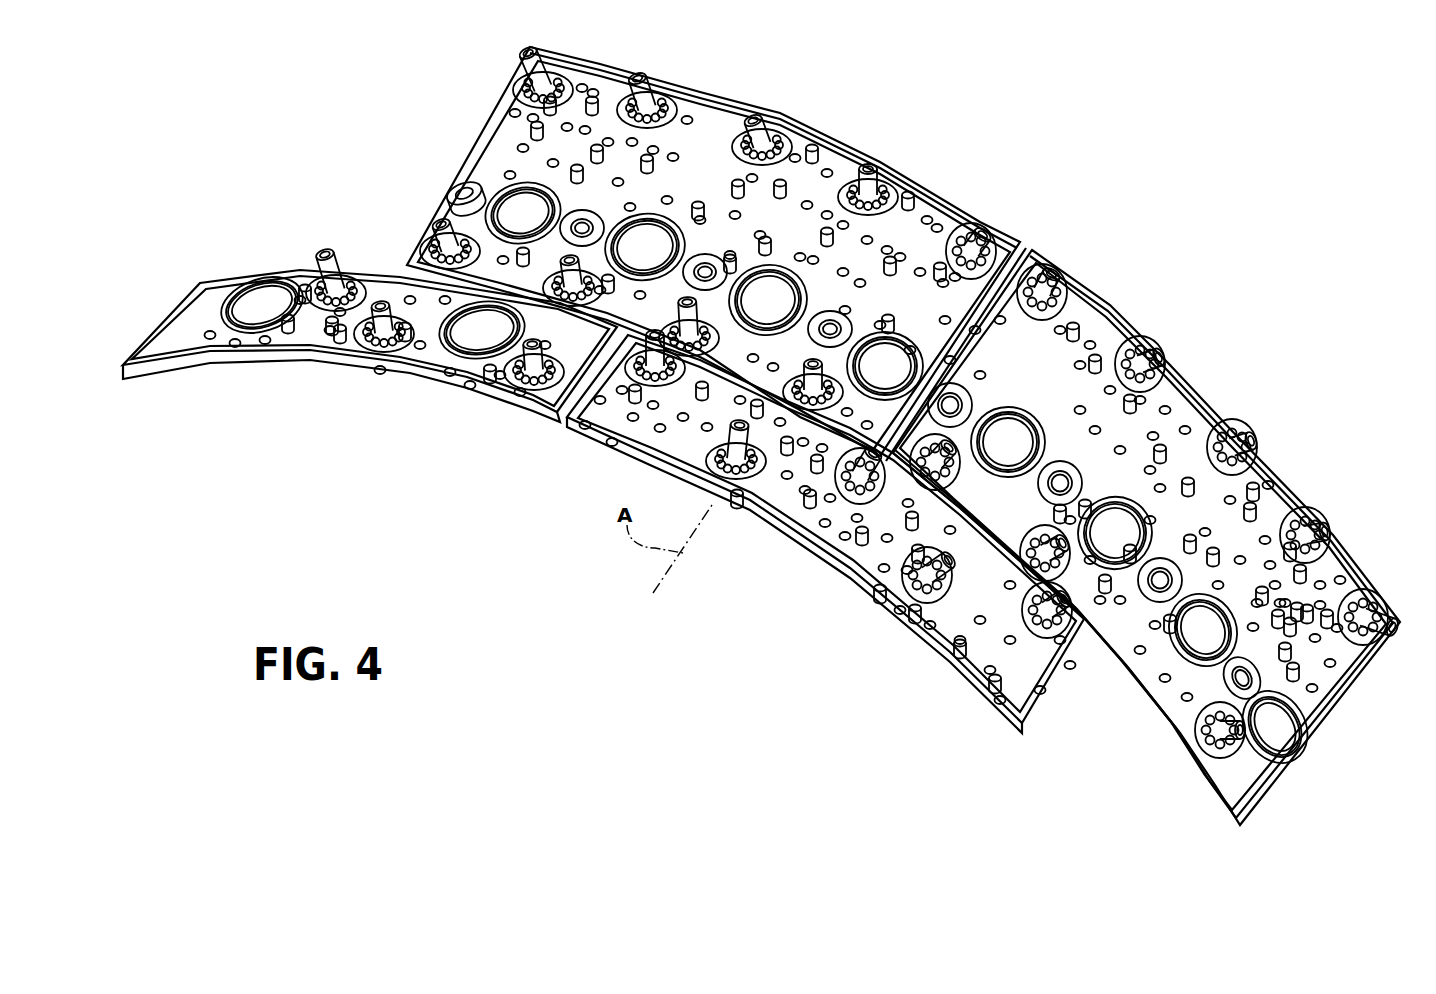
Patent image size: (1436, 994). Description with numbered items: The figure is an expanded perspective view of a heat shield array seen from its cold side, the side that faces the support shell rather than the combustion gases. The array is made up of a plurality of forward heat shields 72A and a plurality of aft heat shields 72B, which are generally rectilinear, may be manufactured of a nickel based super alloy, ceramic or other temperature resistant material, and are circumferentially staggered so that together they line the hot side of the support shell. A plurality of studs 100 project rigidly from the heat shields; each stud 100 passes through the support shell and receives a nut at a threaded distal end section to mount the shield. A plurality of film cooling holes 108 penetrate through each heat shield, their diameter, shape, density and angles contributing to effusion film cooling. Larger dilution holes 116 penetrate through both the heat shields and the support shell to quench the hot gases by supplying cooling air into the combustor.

The forward heat shield 72A is at (185, 292).
The aft heat shield 72B is at (468, 123).
The stud 100 is at (750, 470).
The film cooling hole 108 is at (1153, 433).
The dilution hole 116 is at (1122, 543).